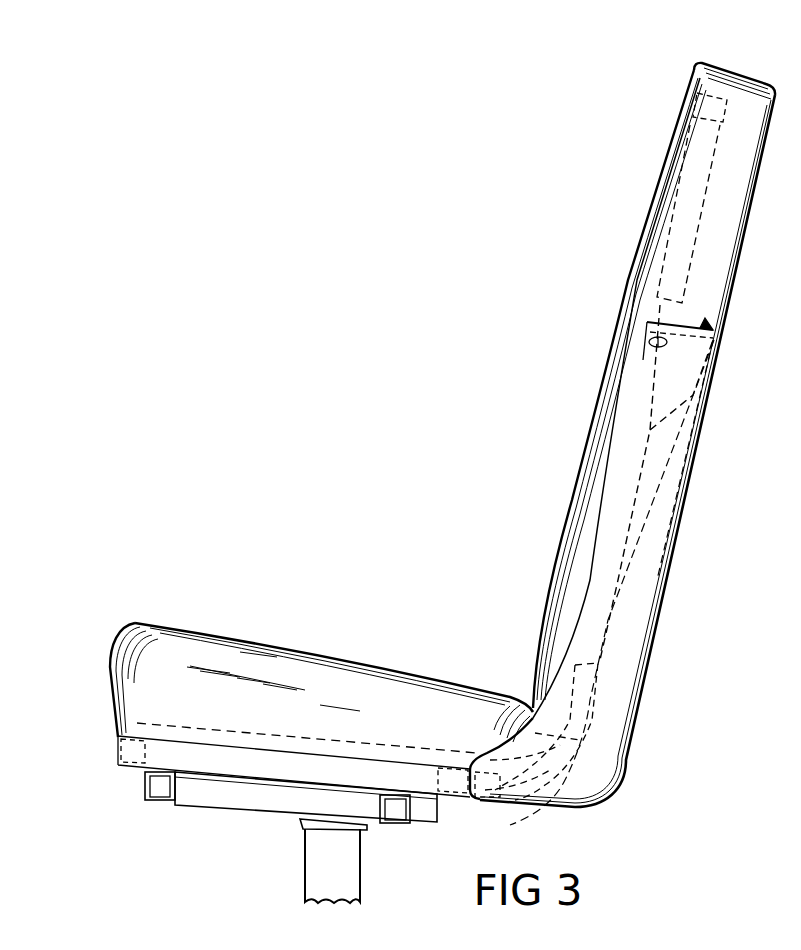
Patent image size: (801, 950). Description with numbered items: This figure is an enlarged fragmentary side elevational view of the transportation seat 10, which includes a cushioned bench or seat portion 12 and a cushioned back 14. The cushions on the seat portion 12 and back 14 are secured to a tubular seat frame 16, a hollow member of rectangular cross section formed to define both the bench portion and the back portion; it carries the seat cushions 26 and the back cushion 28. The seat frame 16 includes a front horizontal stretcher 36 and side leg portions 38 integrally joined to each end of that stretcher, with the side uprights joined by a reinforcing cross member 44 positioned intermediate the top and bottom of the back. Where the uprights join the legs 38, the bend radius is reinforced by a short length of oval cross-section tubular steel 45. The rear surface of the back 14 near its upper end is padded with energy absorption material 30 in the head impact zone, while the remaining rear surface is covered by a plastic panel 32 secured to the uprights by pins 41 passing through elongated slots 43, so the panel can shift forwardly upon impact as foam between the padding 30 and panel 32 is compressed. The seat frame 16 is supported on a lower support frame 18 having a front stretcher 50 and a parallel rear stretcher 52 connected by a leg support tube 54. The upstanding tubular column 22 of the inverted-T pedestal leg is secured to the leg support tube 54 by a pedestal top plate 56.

The transportation seat 10 is at (400, 470).
The seat portion 12 is at (183, 618).
The back 14 is at (578, 378).
The seat frame 16 is at (653, 405).
The support frame 18 is at (250, 818).
The tubular column 22 is at (352, 880).
The seat cushions 26 is at (343, 668).
The back cushion 28 is at (548, 587).
The energy absorption material 30 is at (745, 183).
The plastic panel 32 is at (667, 583).
The front horizontal stretcher 36 is at (118, 748).
The side leg portions 38 is at (237, 755).
The pins 41 is at (653, 338).
The elongated slots 43 is at (675, 342).
The reinforcing cross member 44 is at (650, 278).
The tubular steel reinforcement 45 is at (560, 770).
The front stretcher 50 is at (143, 788).
The rear stretcher 52 is at (397, 812).
The leg support tube 54 is at (215, 802).
The pedestal top plate 56 is at (303, 820).